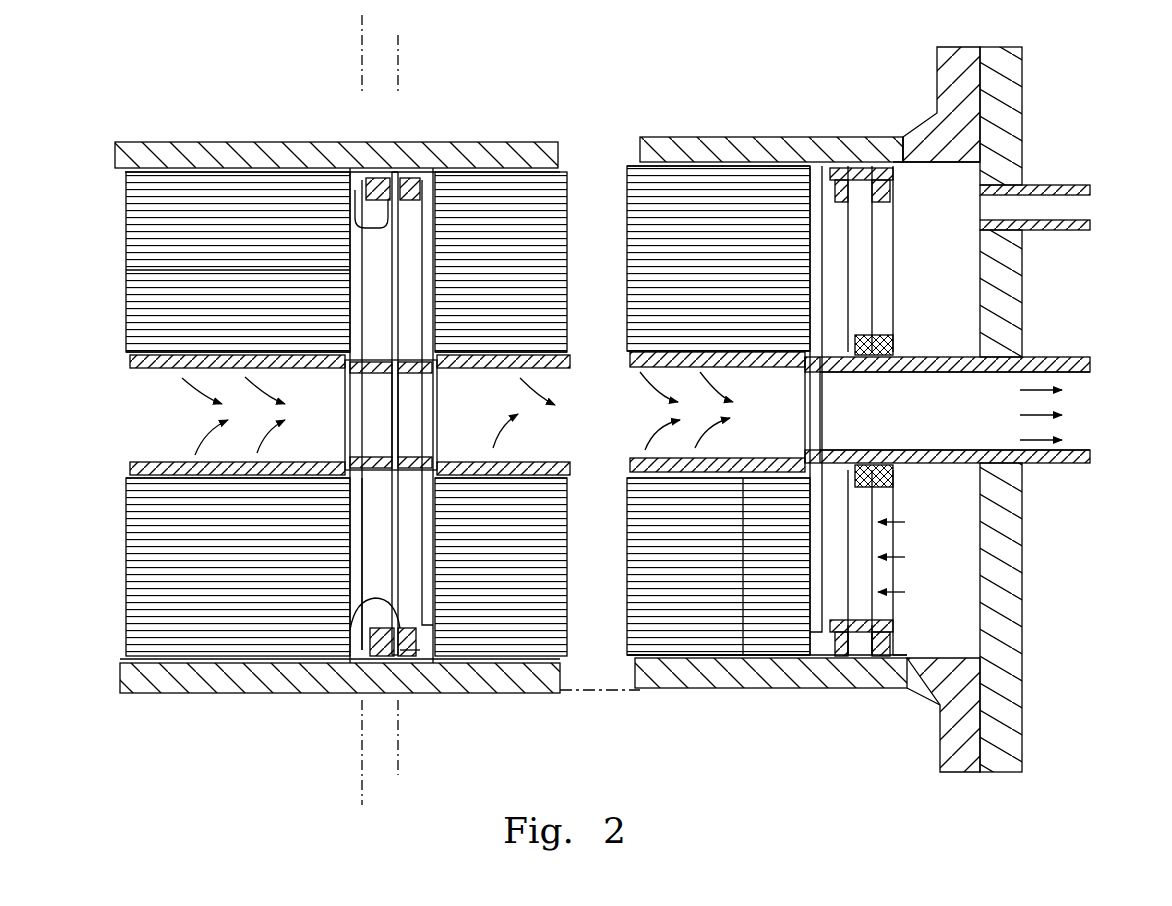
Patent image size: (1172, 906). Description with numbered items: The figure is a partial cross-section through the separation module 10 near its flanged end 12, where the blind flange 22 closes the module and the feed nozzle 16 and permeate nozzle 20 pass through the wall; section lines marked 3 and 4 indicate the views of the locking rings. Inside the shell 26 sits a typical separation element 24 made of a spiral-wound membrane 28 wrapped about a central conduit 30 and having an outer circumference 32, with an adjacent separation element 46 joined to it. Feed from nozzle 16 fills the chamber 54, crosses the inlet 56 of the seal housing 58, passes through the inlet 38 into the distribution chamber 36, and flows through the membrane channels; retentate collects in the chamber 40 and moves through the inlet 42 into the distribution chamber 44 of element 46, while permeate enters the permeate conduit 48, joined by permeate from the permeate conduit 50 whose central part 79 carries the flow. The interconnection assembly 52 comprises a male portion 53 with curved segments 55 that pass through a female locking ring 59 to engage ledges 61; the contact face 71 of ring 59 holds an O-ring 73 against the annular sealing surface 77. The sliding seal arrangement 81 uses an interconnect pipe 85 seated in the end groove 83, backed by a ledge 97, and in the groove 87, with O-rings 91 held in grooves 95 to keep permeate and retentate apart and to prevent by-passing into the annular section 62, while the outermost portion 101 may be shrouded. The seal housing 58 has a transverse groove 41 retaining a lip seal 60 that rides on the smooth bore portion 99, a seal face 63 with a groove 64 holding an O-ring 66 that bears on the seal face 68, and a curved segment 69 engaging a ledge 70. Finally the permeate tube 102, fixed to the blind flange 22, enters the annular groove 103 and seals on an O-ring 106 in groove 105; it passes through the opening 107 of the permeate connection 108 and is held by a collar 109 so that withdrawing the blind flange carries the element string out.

The separation module 10 is at (490, 88).
The flanged end 12 is at (952, 48).
The nozzle 16 is at (1072, 192).
The permeate nozzle 20 is at (1052, 356).
The blind flange 22 is at (1014, 773).
The separation element 24 is at (492, 245).
The shell 26 is at (755, 135).
The spiral-wound membrane 28 is at (693, 578).
The central conduit 30 is at (745, 580).
The outer circumference 32 is at (652, 658).
The distribution chamber 36 is at (812, 240).
The inlet 38 is at (830, 272).
The collection chamber 40 is at (452, 236).
The transverse groove 41 is at (880, 645).
The inlet 42 is at (348, 262).
The distribution chamber 44 is at (290, 268).
The adjacent separation element 46 is at (208, 250).
The permeate conduit 48 is at (518, 468).
The permeate conduit 50 is at (150, 470).
The interconnection assembly 52 is at (393, 178).
The male portion 53 is at (406, 200).
The chamber 54 is at (985, 182).
The curved segments 55 is at (372, 178).
The inlet 56 is at (978, 178).
The seal housing 58 is at (880, 185).
The female locking ring 59 is at (394, 657).
The lip seal 60 is at (878, 655).
The ledges 61 is at (355, 632).
The annular section 62 is at (745, 658).
The seal face 63 is at (846, 188).
The groove 64 is at (838, 178).
The O-ring 66 is at (848, 655).
The seal face 68 is at (842, 640).
The curved segment 69 is at (875, 600).
The ledge 70 is at (862, 210).
The contact face 71 is at (382, 185).
The O-ring 73 is at (408, 652).
The annular sealing surface 77 is at (415, 628).
The central part 79 is at (193, 431).
The sliding seal arrangement 81 is at (372, 486).
The end groove 83 is at (398, 375).
The interconnect pipe 85 is at (383, 400).
The groove 87 is at (415, 458).
The O-rings 91 is at (365, 452).
The grooves 95 is at (425, 375).
The ledge 97 is at (346, 362).
The smooth bore portion 99 is at (940, 658).
The outermost portion 101 is at (678, 160).
The permeate tube 102 is at (1090, 455).
The annular groove 103 is at (818, 400).
The groove 105 is at (808, 372).
The O-ring 106 is at (830, 448).
The opening 107 is at (890, 478).
The permeate connection 108 is at (870, 335).
The collar 109 is at (868, 372).
The section line 3- 3 is at (376, 50).
The section line 4- 4 is at (376, 17).